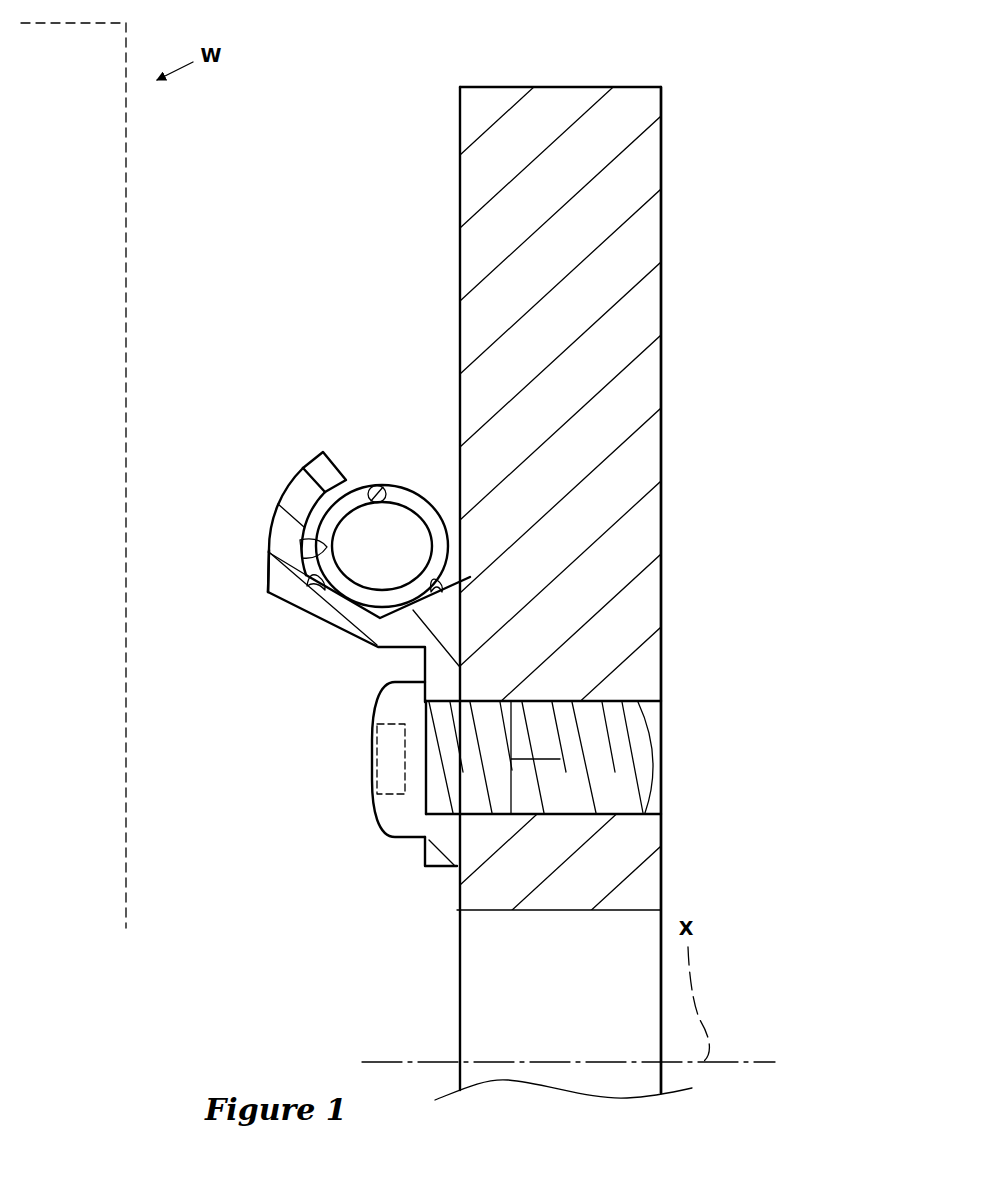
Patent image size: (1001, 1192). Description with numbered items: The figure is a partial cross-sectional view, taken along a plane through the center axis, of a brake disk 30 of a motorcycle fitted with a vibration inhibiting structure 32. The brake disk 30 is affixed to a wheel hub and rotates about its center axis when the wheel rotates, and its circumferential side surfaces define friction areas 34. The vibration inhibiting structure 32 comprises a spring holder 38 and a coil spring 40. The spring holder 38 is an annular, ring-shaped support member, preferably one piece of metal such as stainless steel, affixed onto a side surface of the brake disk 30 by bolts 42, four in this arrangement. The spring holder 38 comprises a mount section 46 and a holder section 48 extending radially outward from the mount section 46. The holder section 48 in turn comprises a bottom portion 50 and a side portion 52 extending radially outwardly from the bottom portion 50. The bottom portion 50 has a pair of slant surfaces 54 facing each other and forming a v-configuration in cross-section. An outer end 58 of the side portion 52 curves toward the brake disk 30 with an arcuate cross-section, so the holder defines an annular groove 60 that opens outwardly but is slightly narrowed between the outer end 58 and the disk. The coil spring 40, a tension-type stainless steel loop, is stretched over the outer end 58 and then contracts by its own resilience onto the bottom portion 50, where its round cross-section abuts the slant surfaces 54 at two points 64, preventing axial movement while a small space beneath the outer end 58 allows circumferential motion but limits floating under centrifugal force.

The brake disk 30 is at (661, 240).
The vibration inhibiting structure 32 is at (333, 385).
The friction areas 34 is at (460, 268).
The spring holder 38 is at (265, 573).
The coil spring 40 is at (403, 484).
The bolts 42 is at (372, 803).
The mount section 46 is at (426, 848).
The holder section 48 is at (268, 592).
The bottom portion 50 is at (334, 626).
The side portion 52 is at (292, 492).
The slant surfaces 54 is at (312, 582).
The outer end 58 is at (310, 463).
The annular groove 60 is at (300, 541).
The two points 64 is at (347, 602).